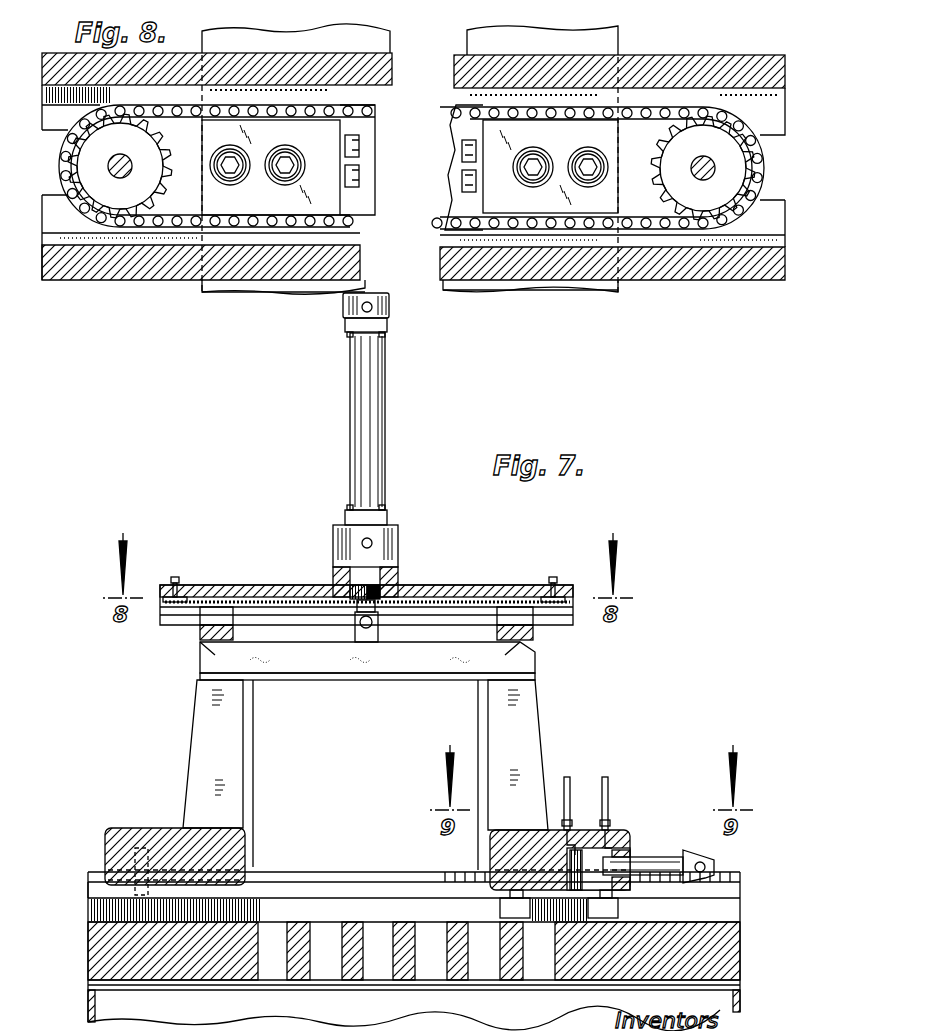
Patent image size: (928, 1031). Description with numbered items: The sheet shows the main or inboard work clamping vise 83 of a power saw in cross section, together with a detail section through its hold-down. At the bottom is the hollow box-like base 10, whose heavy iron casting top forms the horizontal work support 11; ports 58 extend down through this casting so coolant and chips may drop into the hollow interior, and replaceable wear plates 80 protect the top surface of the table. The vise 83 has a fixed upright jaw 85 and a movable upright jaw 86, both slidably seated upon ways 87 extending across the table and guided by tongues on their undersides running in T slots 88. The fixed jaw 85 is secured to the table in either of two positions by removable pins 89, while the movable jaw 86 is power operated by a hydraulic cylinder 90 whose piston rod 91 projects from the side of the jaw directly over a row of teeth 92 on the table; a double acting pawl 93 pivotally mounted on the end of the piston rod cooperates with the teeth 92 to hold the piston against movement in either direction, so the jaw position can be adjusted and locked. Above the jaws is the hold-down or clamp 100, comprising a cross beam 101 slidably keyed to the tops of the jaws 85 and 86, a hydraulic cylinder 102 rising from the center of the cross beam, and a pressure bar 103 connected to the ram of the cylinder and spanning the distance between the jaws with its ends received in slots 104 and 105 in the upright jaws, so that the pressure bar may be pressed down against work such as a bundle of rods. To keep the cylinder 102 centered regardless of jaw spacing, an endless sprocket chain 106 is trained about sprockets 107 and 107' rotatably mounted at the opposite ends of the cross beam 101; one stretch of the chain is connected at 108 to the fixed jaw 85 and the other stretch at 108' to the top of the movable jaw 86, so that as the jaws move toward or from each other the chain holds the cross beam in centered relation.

In FIG. 7, the base 10 is at (88, 1015).
In FIG. 7, the work support 11 is at (356, 854).
In FIG. 7, the ports 58 is at (393, 912).
In FIG. 7, the wear plates 80 is at (385, 872).
In FIG. 7, the main or inboard vise 83 is at (148, 697).
In FIG. 8, the fixed upright jaw 85 is at (282, 283).
In FIG. 7, the fixed upright jaw 85 is at (198, 748).
In FIG. 8, the movable upright jaw 86 is at (592, 285).
In FIG. 7, the movable upright jaw 86 is at (540, 740).
In FIG. 7, the ways 87 is at (272, 872).
In FIG. 7, the T slots 88 is at (302, 912).
In FIG. 7, the removable pins 89 is at (142, 825).
In FIG. 7, the hydraulic cylinder 90 is at (585, 850).
In FIG. 7, the piston rod 91 is at (655, 858).
In FIG. 7, the row of teeth 92 is at (463, 872).
In FIG. 7, the double acting pawl 93 is at (702, 855).
In FIG. 7, the hold-down or clamp 100 is at (428, 557).
In FIG. 8, the cross beam 101 is at (115, 265).
In FIG. 7, the cross beam 101 is at (258, 585).
In FIG. 7, the hydraulic cylinder 102 is at (350, 410).
In FIG. 7, the pressure bar 103 is at (322, 660).
In FIG. 7, the slot 104 is at (205, 700).
In FIG. 7, the slot 105 is at (530, 705).
In FIG. 8, the endless sprocket chain 106 is at (185, 222).
In FIG. 7, the endless sprocket chain 106 is at (310, 600).
In FIG. 8, the sprocket 107 is at (95, 166).
In FIG. 7, the sprocket 107 is at (175, 578).
In FIG. 8, the sprocket 107' is at (729, 168).
In FIG. 7, the sprocket 107' is at (559, 572).
In FIG. 8, the chain connection 108 is at (315, 160).
In FIG. 8, the chain connection 108' is at (505, 167).